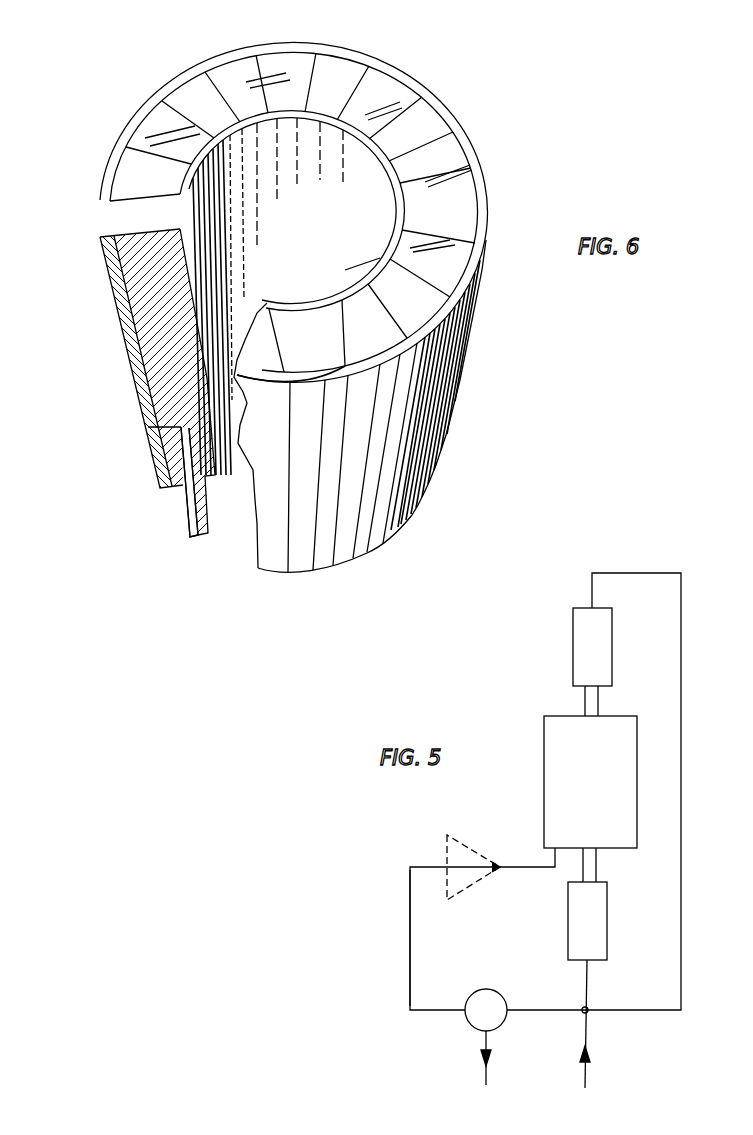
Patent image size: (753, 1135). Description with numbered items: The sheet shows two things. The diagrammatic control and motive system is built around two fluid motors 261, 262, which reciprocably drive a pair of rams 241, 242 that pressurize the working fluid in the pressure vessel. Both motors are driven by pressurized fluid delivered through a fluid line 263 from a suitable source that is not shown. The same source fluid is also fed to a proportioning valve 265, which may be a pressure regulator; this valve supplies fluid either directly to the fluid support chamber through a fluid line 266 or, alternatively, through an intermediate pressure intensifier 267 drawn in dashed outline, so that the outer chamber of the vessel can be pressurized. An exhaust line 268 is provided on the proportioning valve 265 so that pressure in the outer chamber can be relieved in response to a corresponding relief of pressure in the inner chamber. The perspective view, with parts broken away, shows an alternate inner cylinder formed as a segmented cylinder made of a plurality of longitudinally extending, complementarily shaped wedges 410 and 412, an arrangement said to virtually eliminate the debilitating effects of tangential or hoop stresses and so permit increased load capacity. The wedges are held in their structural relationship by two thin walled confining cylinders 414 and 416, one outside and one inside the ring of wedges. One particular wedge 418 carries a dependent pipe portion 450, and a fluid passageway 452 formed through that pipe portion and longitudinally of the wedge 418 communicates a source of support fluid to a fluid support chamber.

In FIG. 6, the wedge 410 is at (390, 97).
In FIG. 6, the wedge 412 is at (342, 70).
In FIG. 6, the confining cylinder 414 is at (470, 150).
In FIG. 6, the confining cylinder 416 is at (388, 270).
In FIG. 6, the wedge 418 is at (120, 213).
In FIG. 6, the dependent pipe portion 450 is at (187, 513).
In FIG. 6, the fluid passageway 452 is at (160, 423).
In FIG. 5, the ram 241 is at (588, 702).
In FIG. 5, the ram 242 is at (597, 870).
In FIG. 5, the fluid motor 261 is at (583, 652).
In FIG. 5, the fluid motor 262 is at (597, 927).
In FIG. 5, the fluid line 263 is at (587, 1072).
In FIG. 5, the proportioning valve 265 is at (487, 990).
In FIG. 5, the fluid line 266 is at (410, 945).
In FIG. 5, the pressure intensifier 267 is at (478, 853).
In FIG. 5, the exhaust line 268 is at (483, 1080).